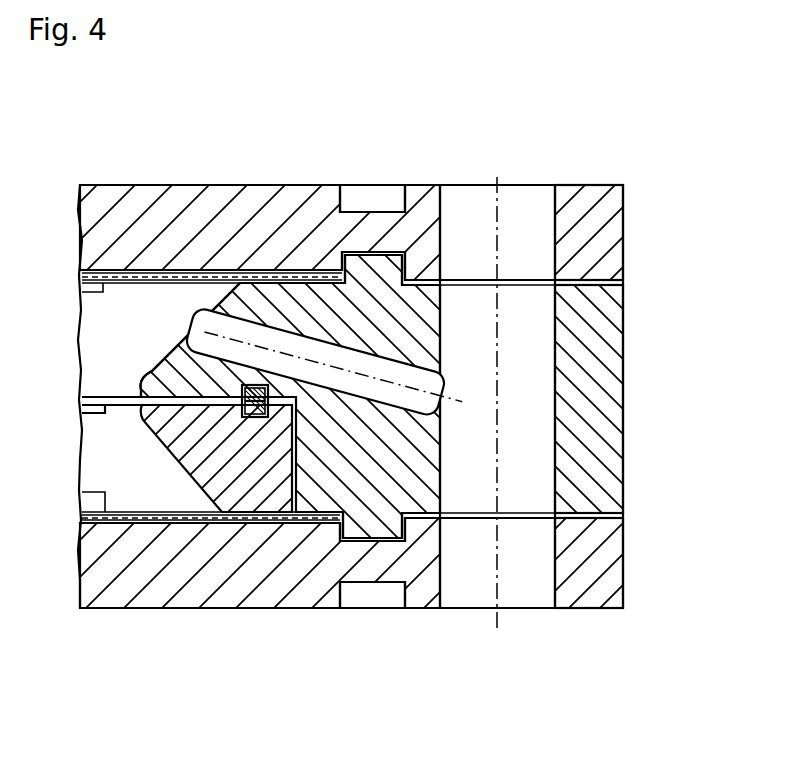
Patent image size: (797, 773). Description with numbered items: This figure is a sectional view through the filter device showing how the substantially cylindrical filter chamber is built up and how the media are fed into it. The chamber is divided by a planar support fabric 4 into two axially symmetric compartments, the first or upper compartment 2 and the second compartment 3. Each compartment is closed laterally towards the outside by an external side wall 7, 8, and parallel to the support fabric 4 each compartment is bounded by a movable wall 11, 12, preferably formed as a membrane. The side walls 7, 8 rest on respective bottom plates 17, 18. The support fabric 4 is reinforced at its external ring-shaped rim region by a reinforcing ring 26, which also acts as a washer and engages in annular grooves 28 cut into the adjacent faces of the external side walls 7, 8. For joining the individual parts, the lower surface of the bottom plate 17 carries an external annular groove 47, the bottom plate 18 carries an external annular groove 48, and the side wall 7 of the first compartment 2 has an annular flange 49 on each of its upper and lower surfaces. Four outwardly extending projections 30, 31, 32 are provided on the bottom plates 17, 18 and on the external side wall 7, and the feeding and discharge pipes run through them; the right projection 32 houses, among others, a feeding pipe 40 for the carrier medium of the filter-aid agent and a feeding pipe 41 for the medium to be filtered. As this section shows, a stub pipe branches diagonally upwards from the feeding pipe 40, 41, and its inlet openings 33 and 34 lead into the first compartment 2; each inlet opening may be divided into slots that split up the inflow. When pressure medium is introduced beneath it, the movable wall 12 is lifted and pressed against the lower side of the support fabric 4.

The first compartment 2 is at (105, 328).
The second compartment 3 is at (158, 490).
The support fabric 4 is at (82, 415).
The external side wall 7 is at (170, 377).
The external side wall 8 is at (177, 436).
The movable wall 11 is at (103, 287).
The movable wall 12 is at (107, 492).
The bottom plate 17 is at (207, 208).
The bottom plate 18 is at (127, 590).
The reinforcing ring 26 is at (258, 420).
The annular grooves 28 is at (251, 420).
The projection 30 is at (603, 232).
The projection 31 is at (603, 566).
The projection 32 is at (608, 375).
The inlet opening 33 is at (202, 320).
The inlet opening 34 is at (294, 263).
The feeding pipe 40 is at (532, 470).
The feeding pipe 41 is at (593, 403).
The external annular groove 47 is at (366, 252).
The external annular groove 48 is at (391, 195).
The annular flange 49 is at (382, 270).